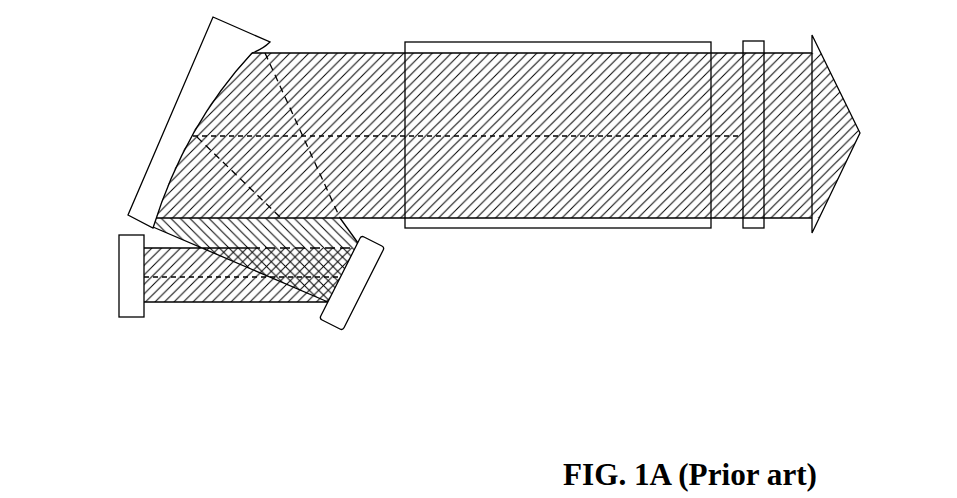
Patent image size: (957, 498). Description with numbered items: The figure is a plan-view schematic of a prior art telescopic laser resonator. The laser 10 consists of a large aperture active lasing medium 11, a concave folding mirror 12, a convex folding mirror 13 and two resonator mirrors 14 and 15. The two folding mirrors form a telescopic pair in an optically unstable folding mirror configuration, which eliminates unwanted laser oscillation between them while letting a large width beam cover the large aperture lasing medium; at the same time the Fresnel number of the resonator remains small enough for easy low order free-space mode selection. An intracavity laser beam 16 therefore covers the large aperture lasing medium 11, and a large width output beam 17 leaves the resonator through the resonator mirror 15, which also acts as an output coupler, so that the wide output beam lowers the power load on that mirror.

The laser 10 is at (122, 97).
The large aperture active lasing medium 11 is at (487, 226).
The concave folding mirror 12 is at (175, 128).
The convex folding mirror 13 is at (365, 288).
The resonator mirror 14 is at (130, 249).
The resonator mirror 15 is at (728, 265).
The intracavity laser beam 16 is at (625, 192).
The output beam 17 is at (827, 190).